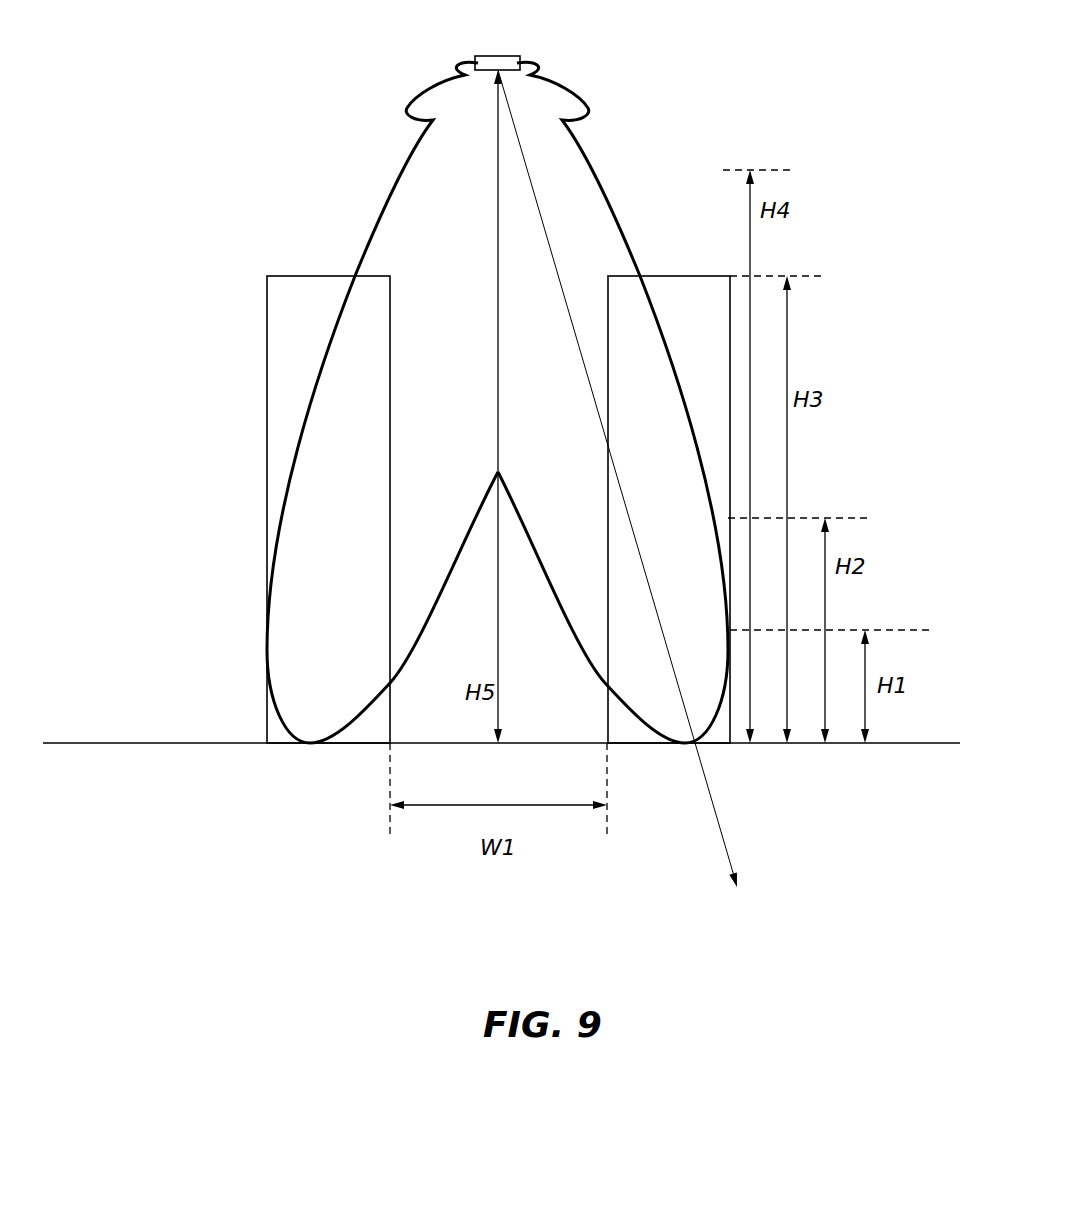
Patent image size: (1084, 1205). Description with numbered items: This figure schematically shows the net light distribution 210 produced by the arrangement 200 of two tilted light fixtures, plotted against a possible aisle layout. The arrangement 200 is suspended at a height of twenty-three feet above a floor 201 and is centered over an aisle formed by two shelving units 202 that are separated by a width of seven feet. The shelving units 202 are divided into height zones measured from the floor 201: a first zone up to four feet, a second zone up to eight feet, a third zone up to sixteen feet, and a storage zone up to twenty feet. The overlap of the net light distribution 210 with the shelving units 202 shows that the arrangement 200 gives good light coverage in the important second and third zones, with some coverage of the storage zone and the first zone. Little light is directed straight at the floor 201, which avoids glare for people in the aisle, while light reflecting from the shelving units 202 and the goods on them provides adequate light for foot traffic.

The arrangement 200 is at (512, 56).
The floor 201 is at (151, 706).
The shelving units 202 is at (308, 284).
The net light distribution 210 is at (590, 147).